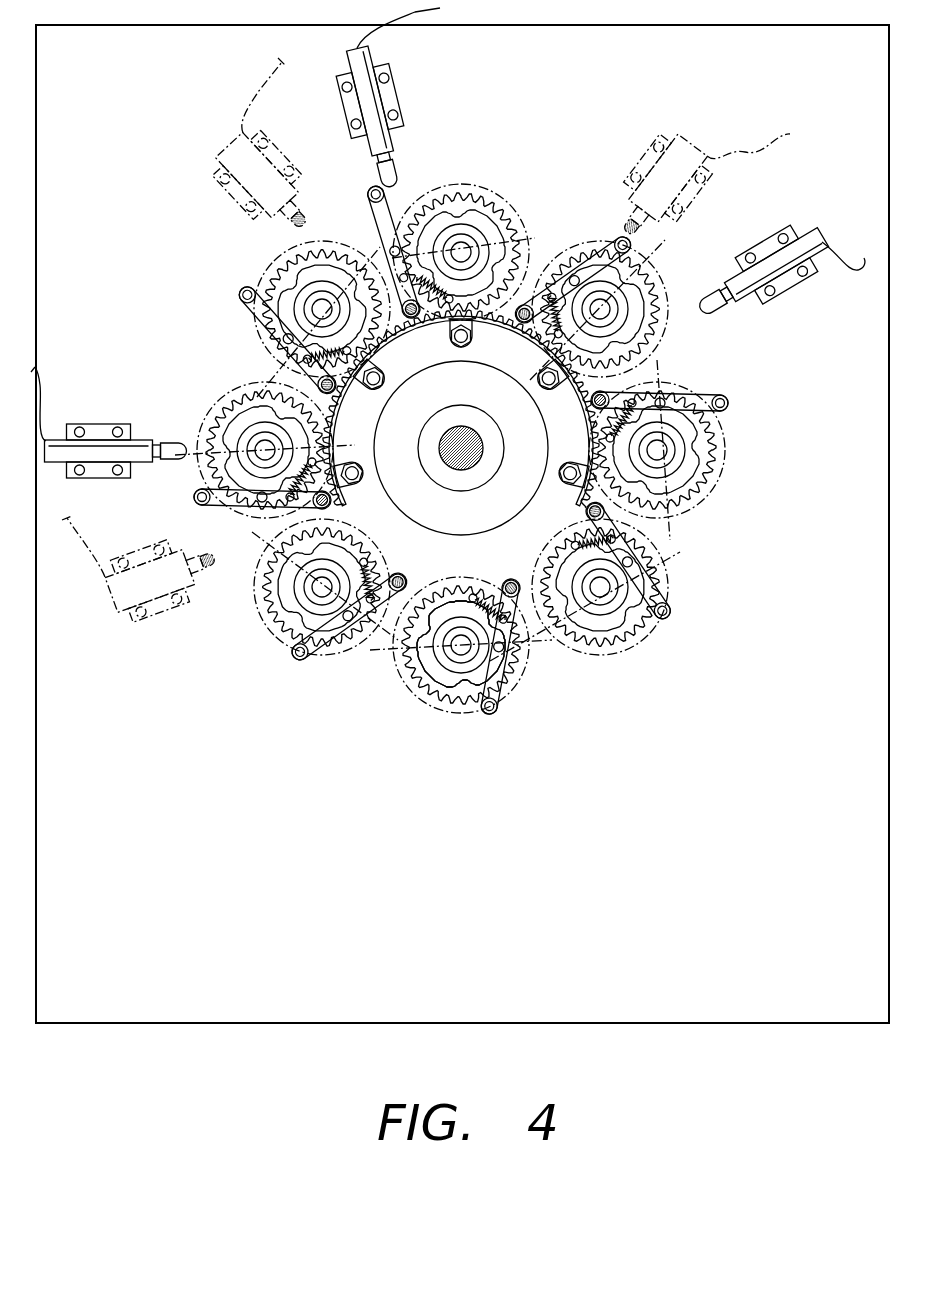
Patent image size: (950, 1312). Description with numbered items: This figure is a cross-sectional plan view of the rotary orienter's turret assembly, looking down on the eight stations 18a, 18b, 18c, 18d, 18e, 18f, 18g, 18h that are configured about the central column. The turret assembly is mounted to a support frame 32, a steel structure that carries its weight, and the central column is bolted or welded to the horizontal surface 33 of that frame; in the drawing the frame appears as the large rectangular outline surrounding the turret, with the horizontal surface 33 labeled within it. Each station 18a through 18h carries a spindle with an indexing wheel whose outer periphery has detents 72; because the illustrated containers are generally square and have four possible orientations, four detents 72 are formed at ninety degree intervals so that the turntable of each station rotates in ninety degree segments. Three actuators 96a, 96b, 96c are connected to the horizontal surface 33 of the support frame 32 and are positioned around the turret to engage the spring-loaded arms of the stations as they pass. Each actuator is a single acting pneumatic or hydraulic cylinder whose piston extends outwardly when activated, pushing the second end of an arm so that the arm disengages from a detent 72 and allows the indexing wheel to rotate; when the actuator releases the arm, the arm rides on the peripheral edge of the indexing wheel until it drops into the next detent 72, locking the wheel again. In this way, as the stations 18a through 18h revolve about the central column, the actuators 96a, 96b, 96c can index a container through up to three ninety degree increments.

The station 18a is at (268, 624).
The station 18b is at (232, 384).
The station 18c is at (262, 268).
The station 18d is at (472, 183).
The station 18e is at (655, 272).
The station 18f is at (722, 453).
The station 18g is at (645, 637).
The station 18h is at (522, 692).
The support frame 32 is at (127, 1024).
The horizontal surface 33 is at (205, 842).
The detent 72 is at (463, 610).
The actuator 96a is at (103, 450).
The actuator 96b is at (368, 92).
The actuator 96c is at (778, 270).